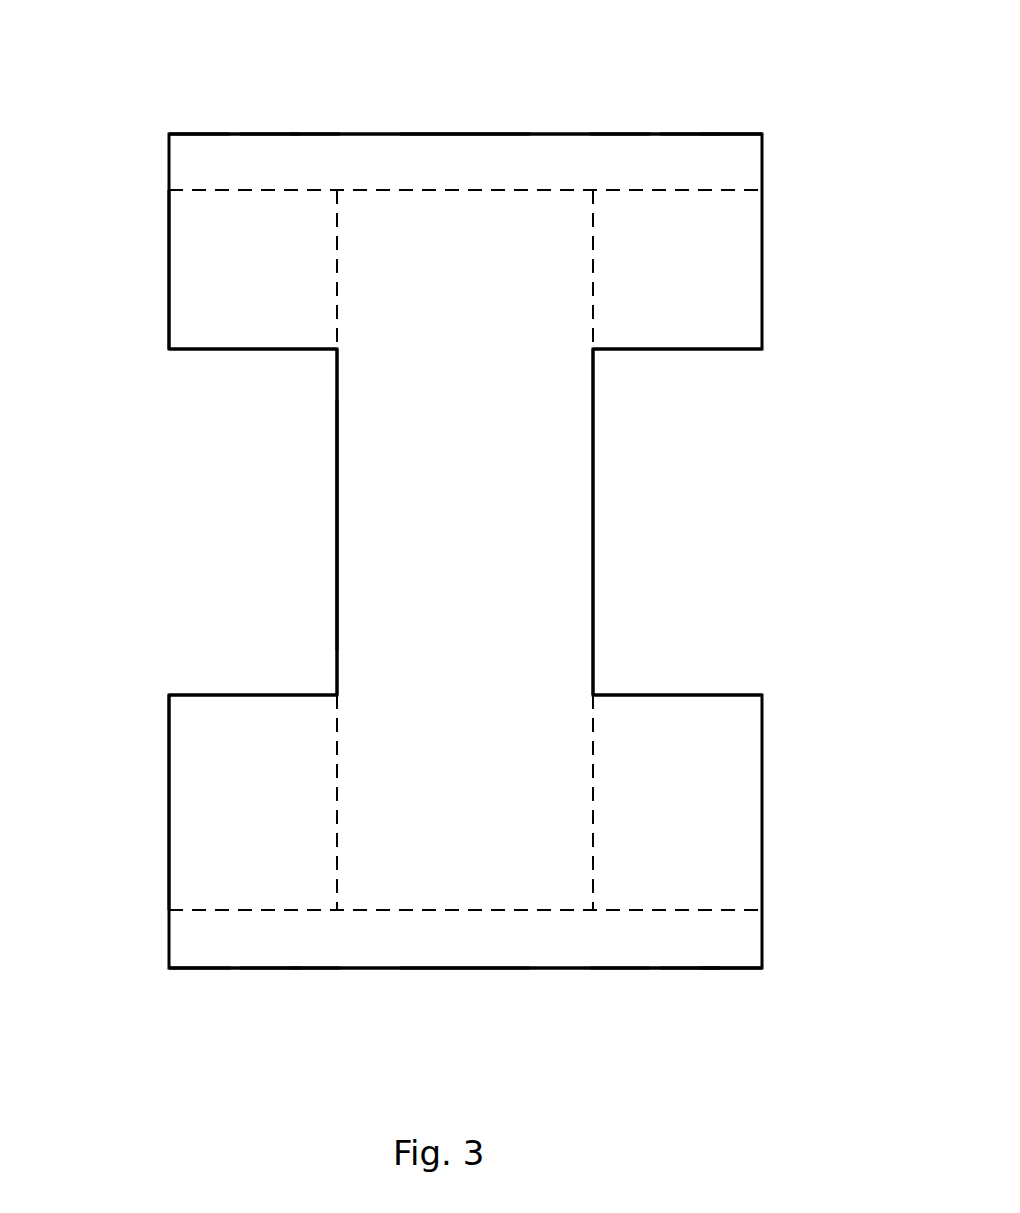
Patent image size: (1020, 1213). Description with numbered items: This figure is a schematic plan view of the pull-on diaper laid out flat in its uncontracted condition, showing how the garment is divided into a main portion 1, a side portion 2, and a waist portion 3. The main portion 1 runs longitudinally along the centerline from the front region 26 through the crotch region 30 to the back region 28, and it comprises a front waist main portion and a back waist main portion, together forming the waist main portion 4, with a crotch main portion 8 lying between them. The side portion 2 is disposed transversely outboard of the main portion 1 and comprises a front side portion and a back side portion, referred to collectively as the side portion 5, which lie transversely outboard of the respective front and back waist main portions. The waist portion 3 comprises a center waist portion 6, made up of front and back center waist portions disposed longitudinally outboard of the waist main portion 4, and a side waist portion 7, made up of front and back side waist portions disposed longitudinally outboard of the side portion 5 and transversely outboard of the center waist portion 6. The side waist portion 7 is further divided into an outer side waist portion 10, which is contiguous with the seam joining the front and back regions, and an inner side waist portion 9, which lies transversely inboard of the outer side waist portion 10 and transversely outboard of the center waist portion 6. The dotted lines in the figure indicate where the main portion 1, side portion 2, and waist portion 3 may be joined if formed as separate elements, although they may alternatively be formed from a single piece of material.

The main portion 1 is at (573, 556).
The side portion 2 is at (157, 235).
The waist portion 3 is at (574, 124).
The waist main portion 4 is at (409, 242).
The side portion (front and back side portions) 5 is at (215, 322).
The center waist portion 6 is at (453, 163).
The side waist portion 7 is at (270, 160).
The crotch main portion 8 is at (375, 515).
The inner side waist portion 9 is at (306, 163).
The outer side waist portion 10 is at (194, 163).
The front region 26 is at (135, 309).
The back region 28 is at (135, 772).
The crotch region 30 is at (177, 525).